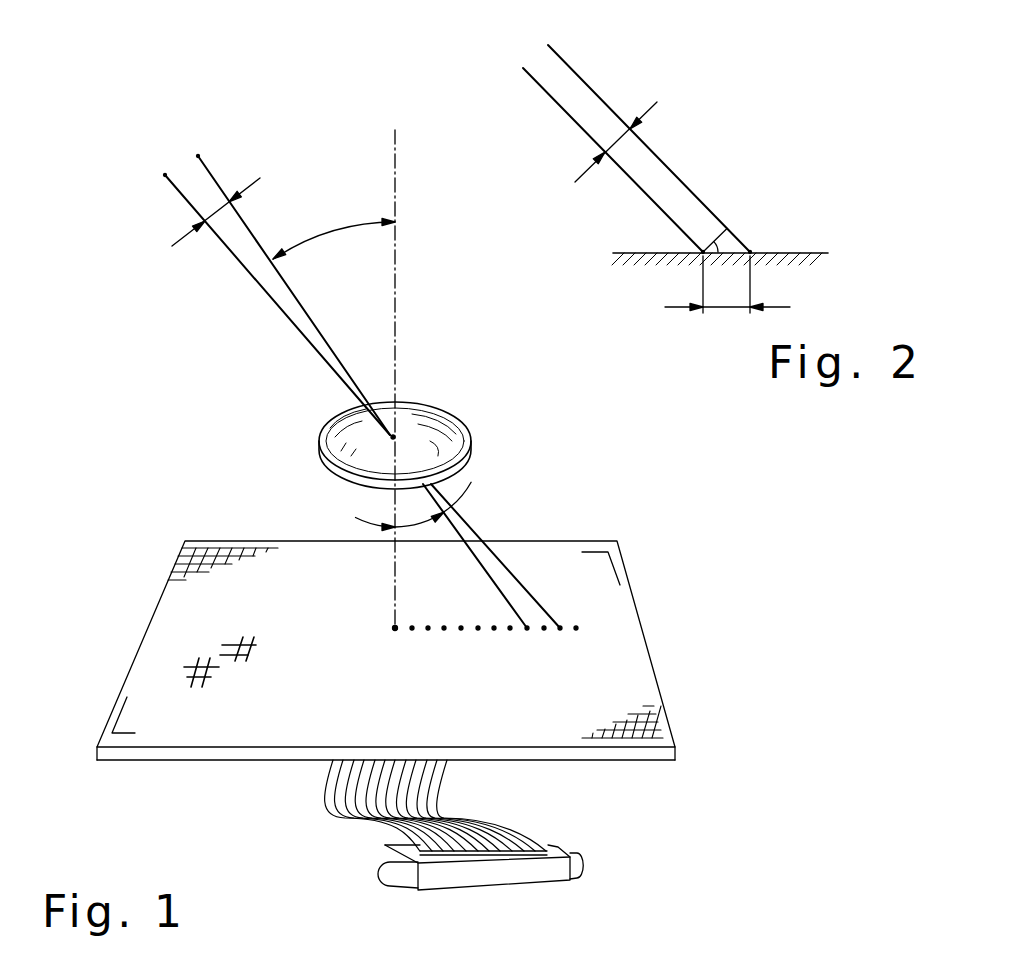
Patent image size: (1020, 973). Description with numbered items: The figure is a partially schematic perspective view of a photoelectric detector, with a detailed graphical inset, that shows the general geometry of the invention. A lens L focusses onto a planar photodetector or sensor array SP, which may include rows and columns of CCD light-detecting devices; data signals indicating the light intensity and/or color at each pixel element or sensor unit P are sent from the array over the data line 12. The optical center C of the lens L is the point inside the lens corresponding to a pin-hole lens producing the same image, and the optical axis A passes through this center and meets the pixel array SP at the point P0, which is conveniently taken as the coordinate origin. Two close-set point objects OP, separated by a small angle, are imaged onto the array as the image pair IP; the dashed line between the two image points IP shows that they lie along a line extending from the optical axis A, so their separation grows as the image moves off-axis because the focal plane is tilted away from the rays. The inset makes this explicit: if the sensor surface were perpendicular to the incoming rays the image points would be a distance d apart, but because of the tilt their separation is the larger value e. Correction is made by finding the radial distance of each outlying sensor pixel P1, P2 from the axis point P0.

In FIG. 1, the object points OP is at (182, 167).
In FIG. 1, the optical axis A is at (433, 379).
In FIG. 1, the optical center of the lens C is at (444, 398).
In FIG. 1, the lens L is at (473, 450).
In FIG. 1, the axis point P0 is at (299, 537).
In FIG. 1, the first sensor pixel P1 is at (162, 613).
In FIG. 1, the second sensor pixel P2 is at (193, 670).
In FIG. 1, the image pair IP is at (564, 597).
In FIG. 2, the image pair IP is at (685, 248).
In FIG. 1, the sensor-element pixel array SP is at (660, 713).
In FIG. 1, the data line 12 is at (389, 825).
In FIG. 2, the perpendicular separation d is at (636, 148).
In FIG. 2, the actual separation e is at (727, 284).
In FIG. 2, the pixel element or sensor unit P is at (743, 282).